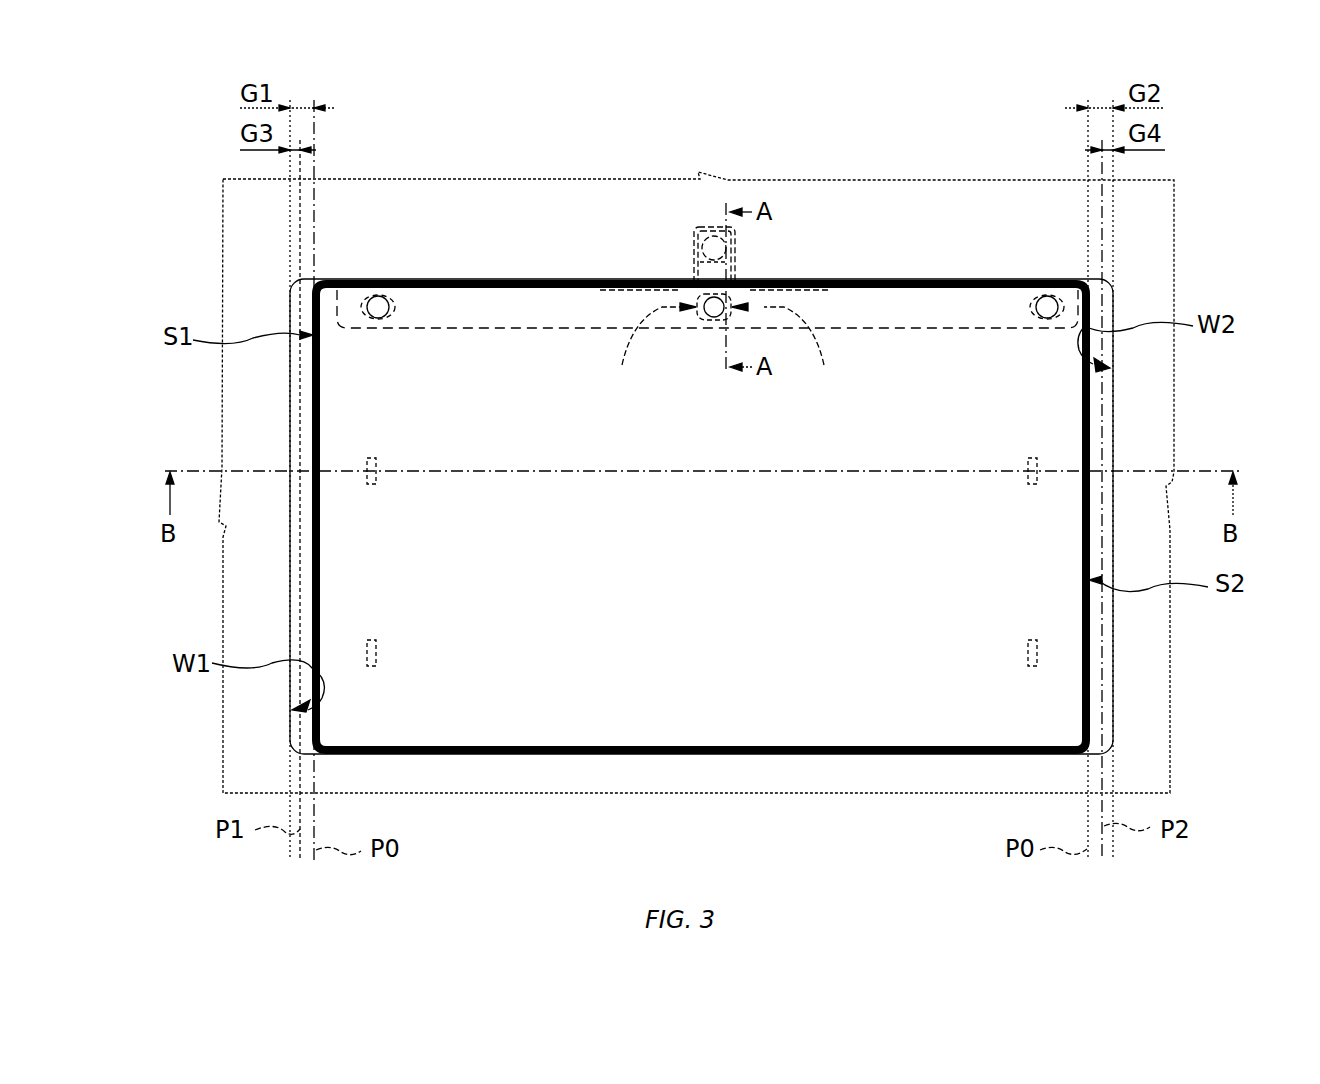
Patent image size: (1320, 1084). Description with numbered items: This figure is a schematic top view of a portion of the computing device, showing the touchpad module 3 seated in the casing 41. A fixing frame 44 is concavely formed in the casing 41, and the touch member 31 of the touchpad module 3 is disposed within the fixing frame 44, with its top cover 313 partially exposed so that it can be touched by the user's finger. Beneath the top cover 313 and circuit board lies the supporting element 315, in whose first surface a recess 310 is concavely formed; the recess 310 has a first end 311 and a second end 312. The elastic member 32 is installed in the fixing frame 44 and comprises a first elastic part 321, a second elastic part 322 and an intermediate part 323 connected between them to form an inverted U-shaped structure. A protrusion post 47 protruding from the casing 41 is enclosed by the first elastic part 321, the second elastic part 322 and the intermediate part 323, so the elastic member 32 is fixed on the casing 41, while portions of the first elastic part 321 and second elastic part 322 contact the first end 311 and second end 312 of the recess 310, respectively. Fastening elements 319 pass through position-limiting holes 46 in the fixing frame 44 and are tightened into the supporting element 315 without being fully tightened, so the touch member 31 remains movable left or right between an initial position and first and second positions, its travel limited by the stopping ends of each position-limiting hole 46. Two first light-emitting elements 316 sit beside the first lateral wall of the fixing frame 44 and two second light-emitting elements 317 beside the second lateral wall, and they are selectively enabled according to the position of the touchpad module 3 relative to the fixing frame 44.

The touchpad module 3 is at (1060, 420).
The touch member 31 is at (701, 487).
The recess 310 is at (701, 416).
The first end 311 is at (750, 287).
The second end 312 is at (680, 287).
The top cover 313 is at (882, 727).
The supporting element 315 is at (448, 312).
The first light-emitting element 316 is at (367, 458).
The second light-emitting element 317 is at (1037, 651).
The fastening element 319 is at (374, 296).
The elastic member 32 is at (737, 195).
The first elastic part 321 is at (760, 216).
The second elastic part 322 is at (694, 255).
The intermediate part 323 is at (700, 245).
The casing 41 is at (1016, 182).
The fixing frame 44 is at (295, 597).
The position-limiting hole 46 is at (844, 392).
The protrusion post 47 is at (699, 260).